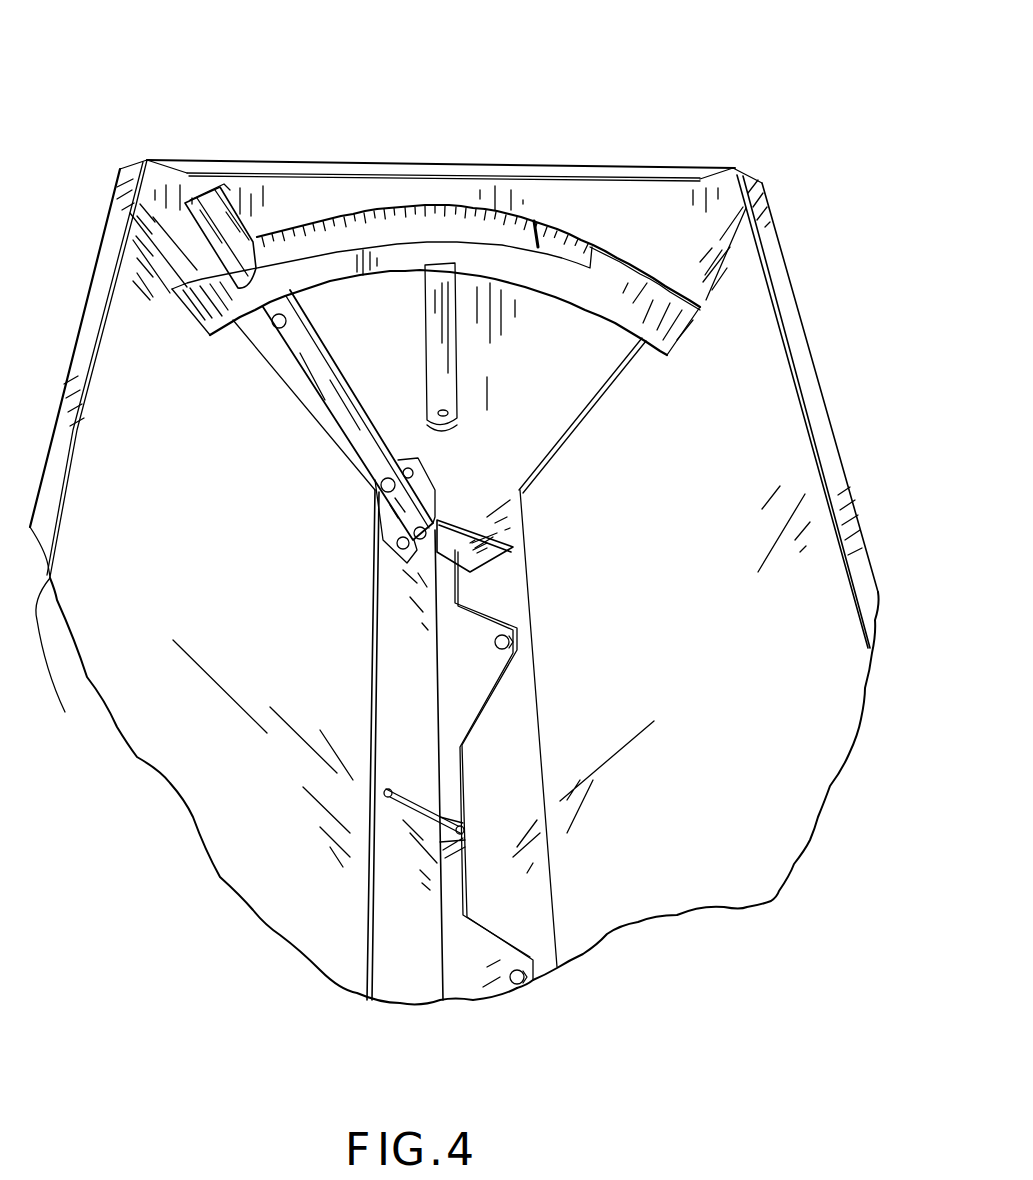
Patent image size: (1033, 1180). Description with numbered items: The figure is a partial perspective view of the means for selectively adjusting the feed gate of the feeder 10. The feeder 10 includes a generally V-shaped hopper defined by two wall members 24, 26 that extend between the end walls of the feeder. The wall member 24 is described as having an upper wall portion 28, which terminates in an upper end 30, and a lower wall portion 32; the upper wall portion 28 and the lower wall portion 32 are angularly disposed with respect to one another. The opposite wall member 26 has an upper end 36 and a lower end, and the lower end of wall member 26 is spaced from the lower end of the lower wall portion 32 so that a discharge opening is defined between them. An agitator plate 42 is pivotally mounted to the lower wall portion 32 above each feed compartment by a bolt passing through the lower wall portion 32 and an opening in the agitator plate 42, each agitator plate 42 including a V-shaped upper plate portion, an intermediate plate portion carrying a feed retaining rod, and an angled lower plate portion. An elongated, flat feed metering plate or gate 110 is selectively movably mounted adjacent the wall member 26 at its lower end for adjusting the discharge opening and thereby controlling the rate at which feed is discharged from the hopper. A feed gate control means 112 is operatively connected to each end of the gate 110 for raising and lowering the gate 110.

The feeder 10 is at (730, 141).
The wall member 24 is at (726, 854).
The wall member 26 is at (253, 853).
The upper wall portion 28 is at (740, 702).
The upper end 30 is at (850, 568).
The lower wall portion 32 is at (515, 797).
The upper end 36 is at (88, 454).
The agitator plate 42 is at (486, 621).
The feed metering plate or gate 110 is at (385, 616).
The feed gate control means 112 is at (538, 238).